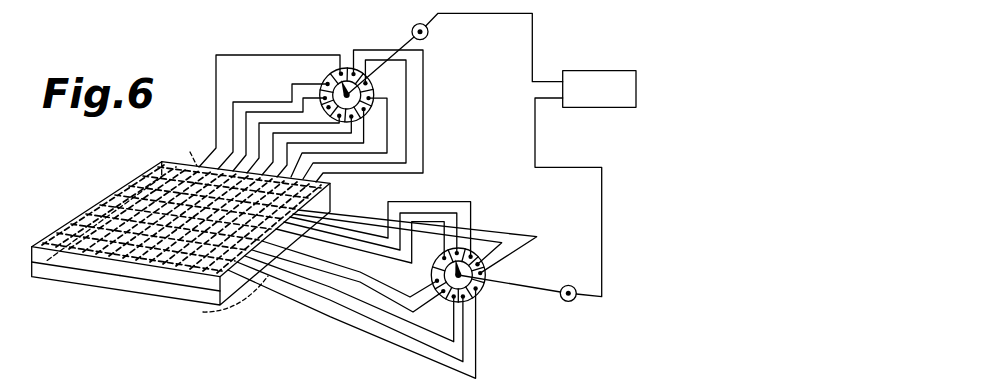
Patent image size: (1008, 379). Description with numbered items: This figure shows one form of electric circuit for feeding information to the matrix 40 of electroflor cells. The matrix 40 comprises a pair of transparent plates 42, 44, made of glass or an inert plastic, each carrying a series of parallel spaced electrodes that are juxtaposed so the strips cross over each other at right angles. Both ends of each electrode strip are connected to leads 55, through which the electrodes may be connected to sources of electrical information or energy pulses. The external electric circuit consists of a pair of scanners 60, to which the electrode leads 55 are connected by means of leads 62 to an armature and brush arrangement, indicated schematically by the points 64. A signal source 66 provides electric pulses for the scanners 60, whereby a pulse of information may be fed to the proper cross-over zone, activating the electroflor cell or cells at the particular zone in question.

The matrix 40 is at (110, 198).
The transparent plate 42 is at (100, 283).
The transparent plate 44 is at (48, 262).
The leads 55 is at (222, 234).
The scanner 60 is at (367, 86).
The leads 62 is at (290, 146).
The armature and brush arrangement 64 is at (342, 75).
The signal source 66 is at (612, 70).